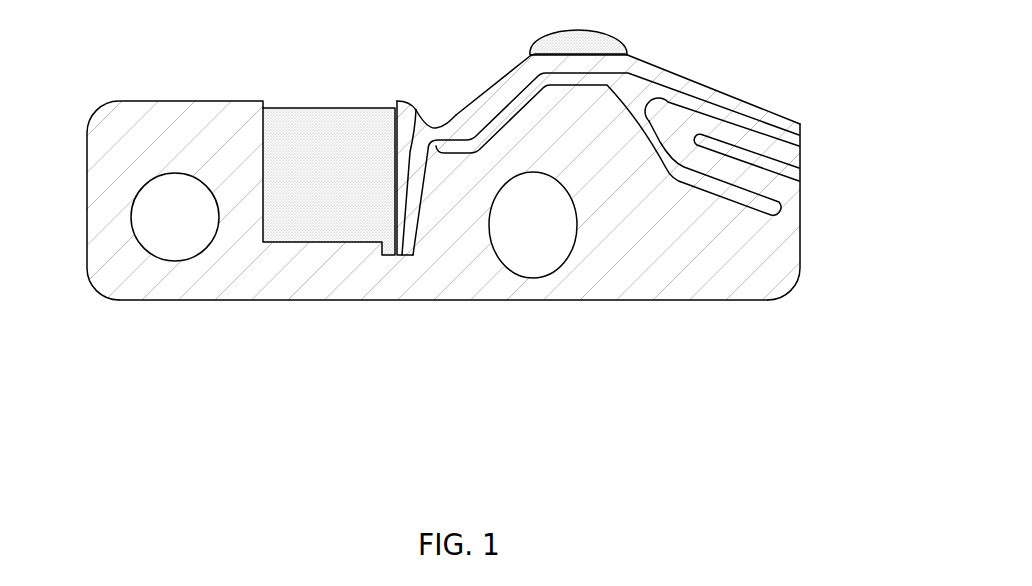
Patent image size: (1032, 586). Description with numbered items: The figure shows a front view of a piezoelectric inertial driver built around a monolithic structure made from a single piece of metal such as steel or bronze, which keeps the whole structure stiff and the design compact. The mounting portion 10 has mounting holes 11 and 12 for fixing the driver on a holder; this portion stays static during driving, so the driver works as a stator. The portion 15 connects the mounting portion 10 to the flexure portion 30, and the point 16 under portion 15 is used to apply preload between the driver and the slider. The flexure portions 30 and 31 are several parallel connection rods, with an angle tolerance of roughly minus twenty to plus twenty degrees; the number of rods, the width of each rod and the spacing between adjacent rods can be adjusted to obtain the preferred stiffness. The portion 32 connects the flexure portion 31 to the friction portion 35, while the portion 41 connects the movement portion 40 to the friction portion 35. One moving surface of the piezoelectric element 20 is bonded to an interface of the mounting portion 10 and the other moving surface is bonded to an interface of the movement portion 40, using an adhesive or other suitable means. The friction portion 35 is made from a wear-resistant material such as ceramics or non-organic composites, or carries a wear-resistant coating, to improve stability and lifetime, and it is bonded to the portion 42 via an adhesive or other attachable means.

The mounting portion 10 is at (148, 153).
The mounting hole 11 is at (190, 240).
The mounting hole 12 is at (552, 253).
The connecting portion 15 is at (682, 255).
The preload point 16 is at (643, 300).
The piezoelectric element 20 is at (343, 133).
The flexure portion 30 is at (760, 181).
The flexure portion 31 is at (750, 143).
The connecting portion 32 is at (711, 106).
The friction portion 35 is at (590, 47).
The movement portion 40 is at (416, 110).
The connecting portion 41 is at (436, 124).
The bonding portion 42 is at (603, 67).